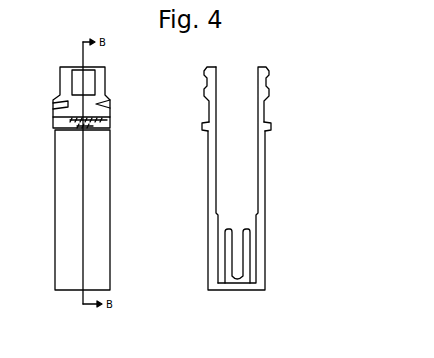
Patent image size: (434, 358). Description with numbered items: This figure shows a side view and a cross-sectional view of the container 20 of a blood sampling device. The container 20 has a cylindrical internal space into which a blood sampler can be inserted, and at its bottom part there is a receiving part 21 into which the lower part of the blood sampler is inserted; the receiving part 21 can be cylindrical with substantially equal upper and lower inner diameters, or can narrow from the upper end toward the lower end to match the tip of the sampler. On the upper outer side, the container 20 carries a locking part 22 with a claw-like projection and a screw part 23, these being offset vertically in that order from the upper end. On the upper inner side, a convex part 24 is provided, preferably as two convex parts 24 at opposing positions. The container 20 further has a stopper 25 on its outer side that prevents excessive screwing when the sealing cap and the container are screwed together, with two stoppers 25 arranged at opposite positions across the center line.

The container 20 is at (110, 198).
The receiving part 21 is at (248, 262).
The locking part 22 is at (270, 82).
The screw part 23 is at (101, 103).
The convex part 24 is at (218, 84).
The stopper 25 is at (110, 121).